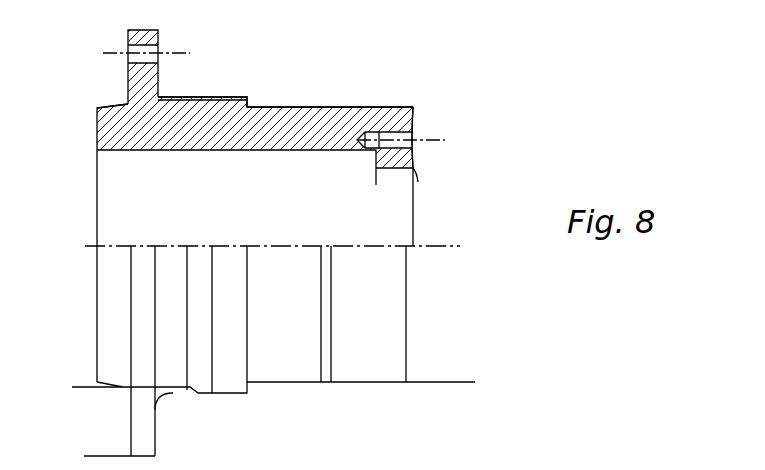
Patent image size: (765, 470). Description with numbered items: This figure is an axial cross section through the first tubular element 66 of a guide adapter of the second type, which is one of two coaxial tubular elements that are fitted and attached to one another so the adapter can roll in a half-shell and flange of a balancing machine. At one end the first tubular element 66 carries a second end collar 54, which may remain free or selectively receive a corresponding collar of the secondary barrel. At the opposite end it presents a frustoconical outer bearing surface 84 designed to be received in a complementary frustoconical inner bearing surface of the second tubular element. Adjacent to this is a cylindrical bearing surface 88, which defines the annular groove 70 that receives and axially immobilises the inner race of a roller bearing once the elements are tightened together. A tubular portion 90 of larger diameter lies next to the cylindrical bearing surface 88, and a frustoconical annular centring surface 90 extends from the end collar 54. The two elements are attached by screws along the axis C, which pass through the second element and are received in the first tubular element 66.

The second end collar 54 is at (128, 78).
The first tubular element 66 is at (296, 108).
The annular groove 70 is at (248, 100).
The frustoconical outer bearing surface 84 is at (390, 107).
The cylindrical bearing surface 88 is at (352, 107).
The tubular portion 90 is at (125, 104).
The axis of screws C is at (447, 137).